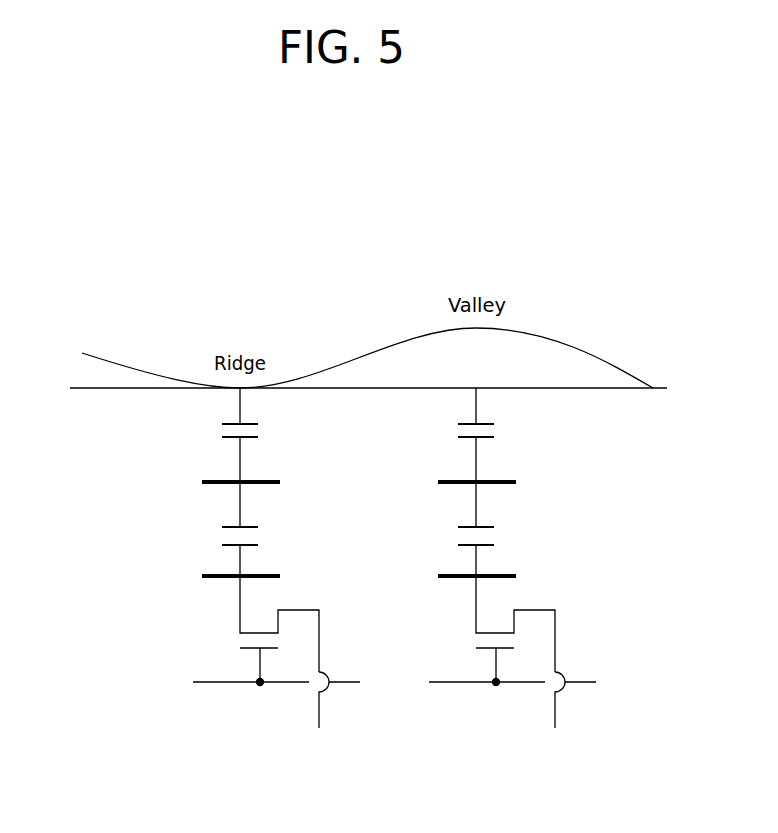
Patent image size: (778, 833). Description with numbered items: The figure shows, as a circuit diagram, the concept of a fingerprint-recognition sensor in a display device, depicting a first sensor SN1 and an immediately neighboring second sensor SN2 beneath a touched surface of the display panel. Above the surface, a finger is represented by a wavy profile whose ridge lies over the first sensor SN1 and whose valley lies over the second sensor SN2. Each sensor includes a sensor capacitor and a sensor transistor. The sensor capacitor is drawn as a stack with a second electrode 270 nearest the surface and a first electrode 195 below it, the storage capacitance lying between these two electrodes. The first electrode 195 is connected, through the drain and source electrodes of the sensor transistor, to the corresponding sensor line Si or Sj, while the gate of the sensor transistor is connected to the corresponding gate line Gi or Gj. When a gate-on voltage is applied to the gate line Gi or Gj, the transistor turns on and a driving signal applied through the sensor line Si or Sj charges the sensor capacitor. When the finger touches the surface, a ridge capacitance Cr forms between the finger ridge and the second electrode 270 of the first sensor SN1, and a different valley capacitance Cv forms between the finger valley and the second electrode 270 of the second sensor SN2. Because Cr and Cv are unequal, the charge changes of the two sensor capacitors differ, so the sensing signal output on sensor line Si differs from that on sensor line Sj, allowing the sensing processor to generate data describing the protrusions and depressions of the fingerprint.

The second electrode 270 is at (280, 482).
The first electrode 195 is at (280, 576).
The ridge capacitance Cr is at (257, 426).
The valley capacitance Cv is at (495, 426).
The gate line Gi is at (264, 684).
The gate line Gj is at (527, 684).
The sensor line Si is at (319, 716).
The sensor line Sj is at (555, 716).
The first sensor SN1 is at (258, 779).
The second sensor SN2 is at (494, 779).
The element surface is at (116, 392).